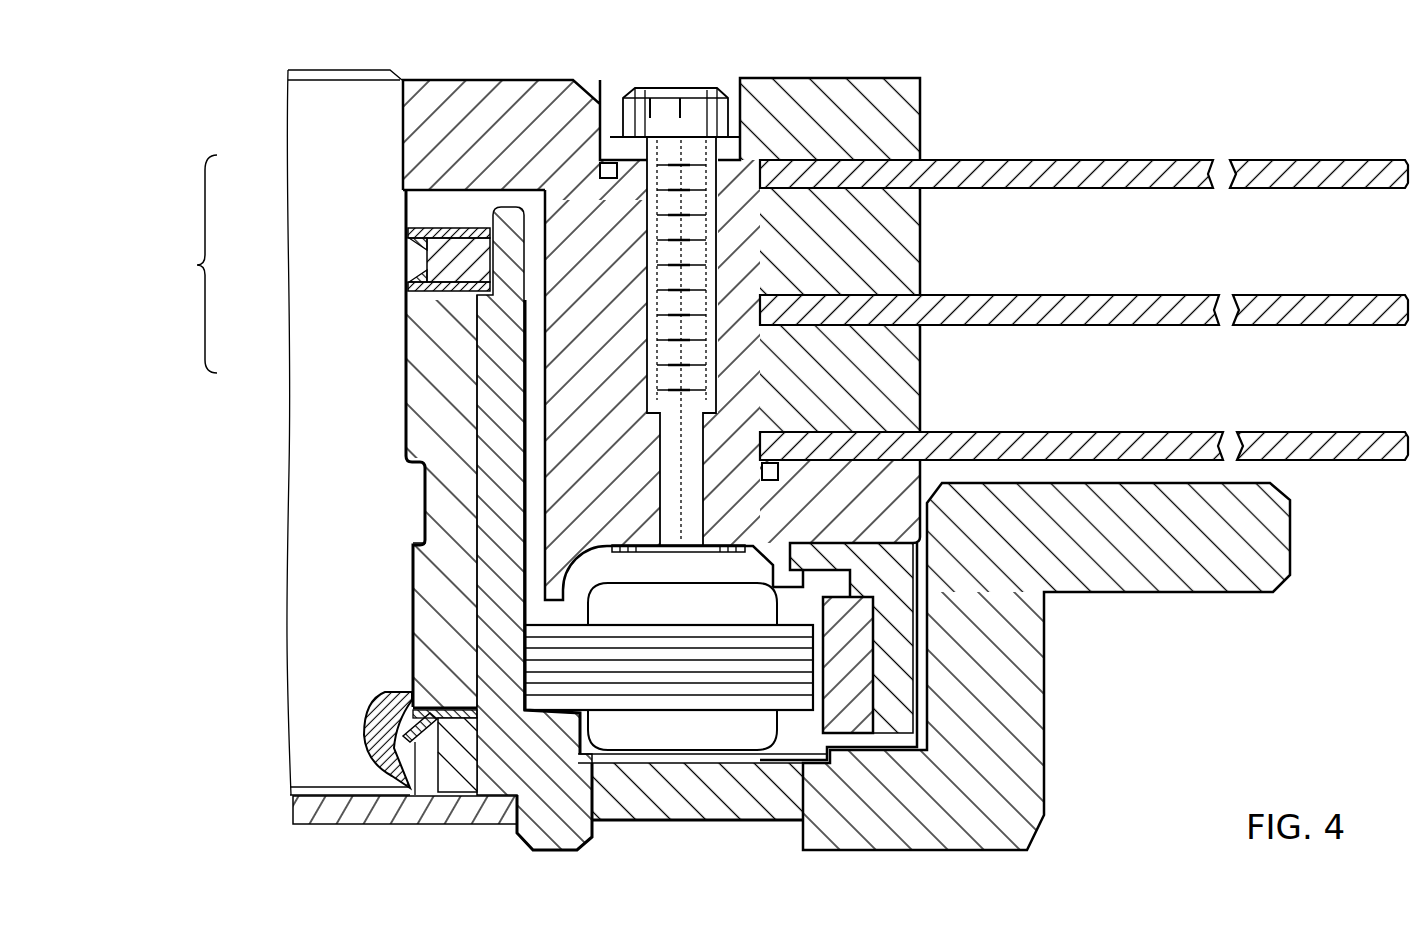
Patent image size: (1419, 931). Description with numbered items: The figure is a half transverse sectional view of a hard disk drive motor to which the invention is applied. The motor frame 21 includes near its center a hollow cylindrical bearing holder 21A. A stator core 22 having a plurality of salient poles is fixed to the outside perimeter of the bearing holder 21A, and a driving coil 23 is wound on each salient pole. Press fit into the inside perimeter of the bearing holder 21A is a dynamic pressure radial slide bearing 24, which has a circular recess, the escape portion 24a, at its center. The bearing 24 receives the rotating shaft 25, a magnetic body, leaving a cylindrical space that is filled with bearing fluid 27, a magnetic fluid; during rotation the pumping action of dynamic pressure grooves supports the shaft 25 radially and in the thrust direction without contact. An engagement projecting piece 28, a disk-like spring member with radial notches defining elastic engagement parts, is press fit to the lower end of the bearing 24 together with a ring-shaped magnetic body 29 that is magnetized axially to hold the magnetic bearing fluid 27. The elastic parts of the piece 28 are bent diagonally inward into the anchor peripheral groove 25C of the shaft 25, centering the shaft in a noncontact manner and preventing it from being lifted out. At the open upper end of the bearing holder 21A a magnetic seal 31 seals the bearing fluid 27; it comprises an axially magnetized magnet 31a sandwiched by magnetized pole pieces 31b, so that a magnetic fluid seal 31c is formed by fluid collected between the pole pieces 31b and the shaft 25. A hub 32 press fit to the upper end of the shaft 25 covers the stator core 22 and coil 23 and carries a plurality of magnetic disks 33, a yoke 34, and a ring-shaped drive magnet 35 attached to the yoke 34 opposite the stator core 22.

The motor frame 21 is at (1159, 570).
The bearing holder 21A is at (515, 626).
The stator core 22 is at (750, 683).
The driving coil 23 is at (618, 732).
The dynamic pressure radial slide bearing 24 is at (437, 453).
The escape portion 24a is at (417, 533).
The rotating shaft 25 is at (300, 668).
The anchor peripheral groove 25C is at (368, 745).
The bearing fluid 27 is at (408, 500).
The engagement projecting piece 28 is at (410, 793).
The magnetic body 29 is at (467, 790).
The magnetic seal 31 is at (176, 284).
The magnet 31a is at (432, 265).
The pole pieces 31b is at (408, 231).
The magnetic fluid seal 31c is at (410, 240).
The hub 32 is at (427, 97).
The magnetic disks 33 is at (1050, 163).
The yoke 34 is at (910, 712).
The drive magnet 35 is at (838, 666).